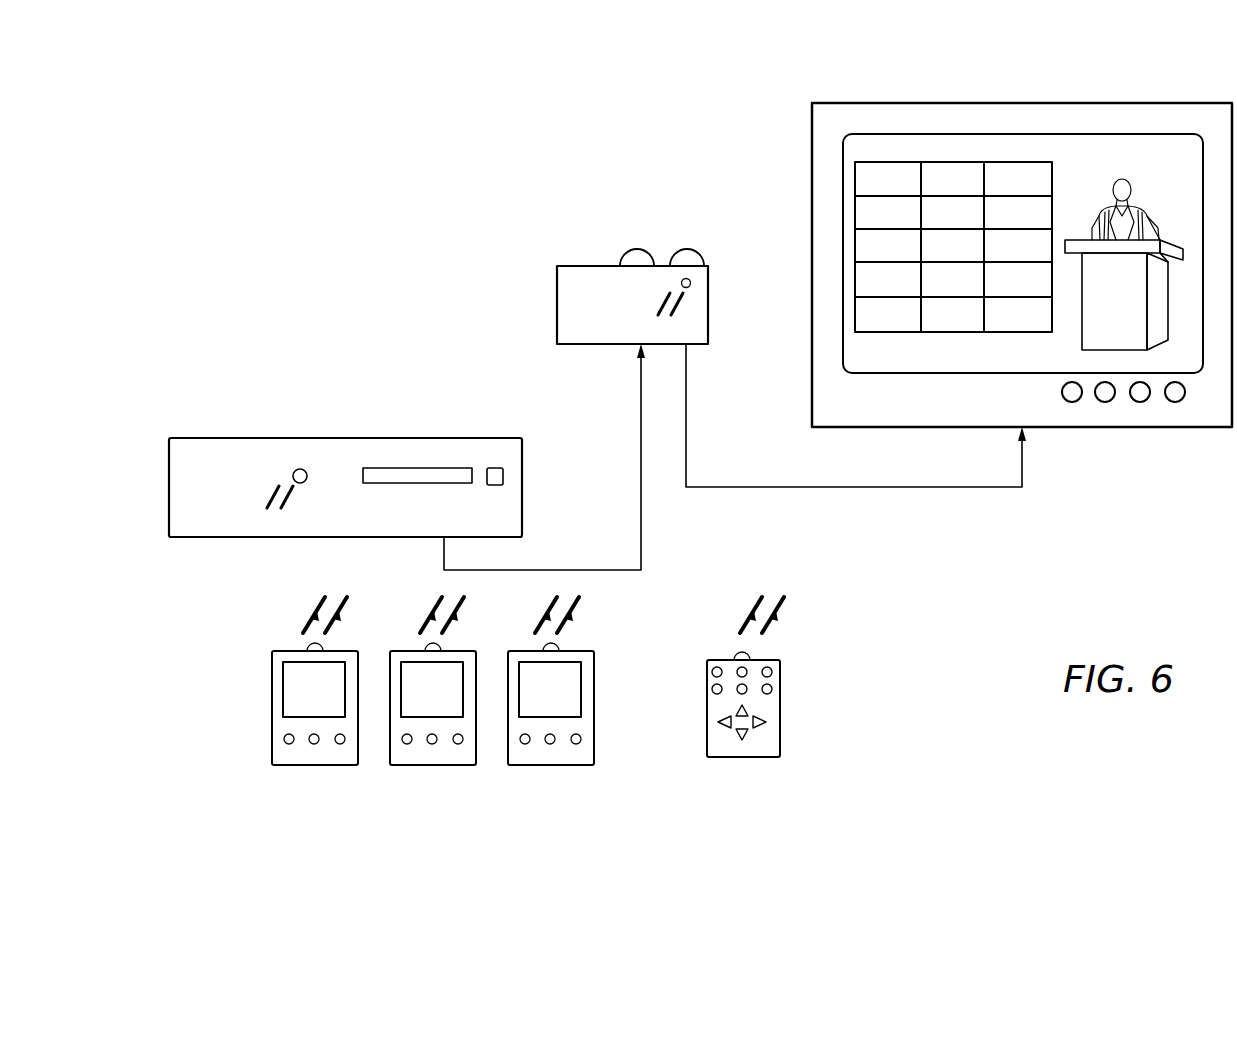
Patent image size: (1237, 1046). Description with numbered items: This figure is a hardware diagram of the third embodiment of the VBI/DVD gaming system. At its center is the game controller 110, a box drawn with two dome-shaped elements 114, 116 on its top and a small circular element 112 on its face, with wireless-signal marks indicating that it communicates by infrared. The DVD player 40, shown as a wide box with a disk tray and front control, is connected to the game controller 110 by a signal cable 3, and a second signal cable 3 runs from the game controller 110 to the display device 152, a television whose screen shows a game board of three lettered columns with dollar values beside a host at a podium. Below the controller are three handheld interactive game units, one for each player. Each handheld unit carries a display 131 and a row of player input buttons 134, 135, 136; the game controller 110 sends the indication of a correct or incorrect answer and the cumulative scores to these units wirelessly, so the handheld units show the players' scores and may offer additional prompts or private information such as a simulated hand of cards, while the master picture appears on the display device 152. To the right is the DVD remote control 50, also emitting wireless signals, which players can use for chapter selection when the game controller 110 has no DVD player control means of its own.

The television display 152 is at (940, 103).
The game controller 110 is at (540, 246).
The wireless receiver dome 114 is at (638, 250).
The wireless receiver dome 116 is at (688, 250).
The indicator / sensor 112 is at (691, 283).
The DVD player 40 is at (442, 438).
The connection cable 3 is at (527, 582).
The display 131 is at (566, 660).
The player input button 134 is at (519, 739).
The player input button 135 is at (555, 735).
The player input button 136 is at (577, 745).
The DVD remote control 50 is at (780, 697).